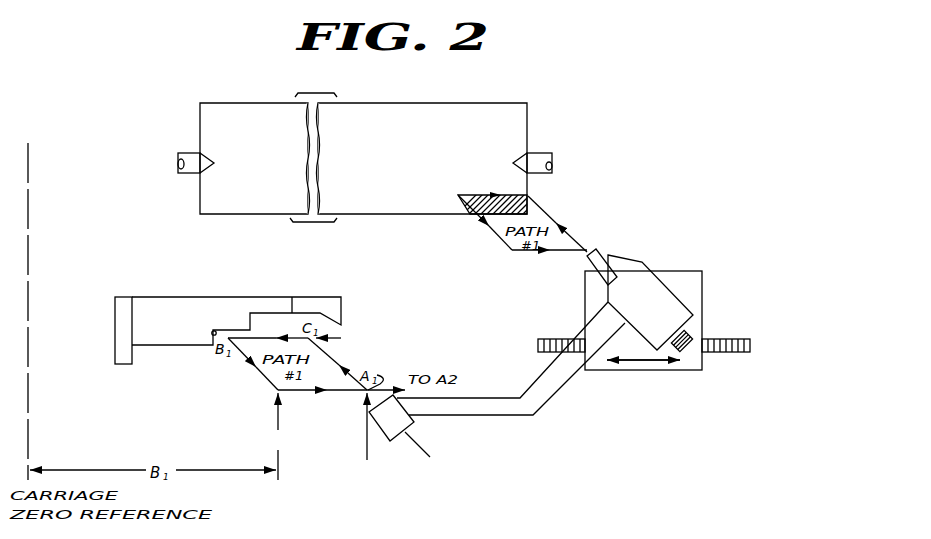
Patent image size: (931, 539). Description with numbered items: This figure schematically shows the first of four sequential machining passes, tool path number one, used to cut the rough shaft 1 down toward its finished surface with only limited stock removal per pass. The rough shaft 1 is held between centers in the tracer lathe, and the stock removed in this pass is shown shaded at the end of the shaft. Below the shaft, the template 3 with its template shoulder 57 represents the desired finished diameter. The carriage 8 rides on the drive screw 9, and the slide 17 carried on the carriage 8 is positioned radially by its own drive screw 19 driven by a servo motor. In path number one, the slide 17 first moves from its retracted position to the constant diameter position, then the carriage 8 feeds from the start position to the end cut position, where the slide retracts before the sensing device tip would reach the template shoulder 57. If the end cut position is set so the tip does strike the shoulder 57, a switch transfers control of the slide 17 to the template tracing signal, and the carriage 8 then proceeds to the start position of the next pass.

The rough shaft 1 is at (383, 103).
The template 3 is at (186, 297).
The template shoulder 57 is at (212, 332).
The carriage 8 is at (693, 288).
The slide 17 is at (641, 266).
The drive screw 9 is at (555, 339).
The drive screw 19 is at (693, 333).